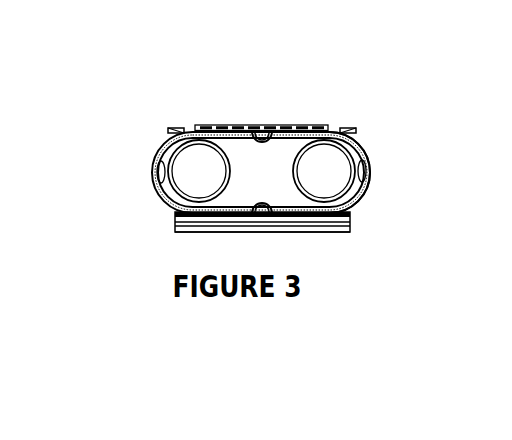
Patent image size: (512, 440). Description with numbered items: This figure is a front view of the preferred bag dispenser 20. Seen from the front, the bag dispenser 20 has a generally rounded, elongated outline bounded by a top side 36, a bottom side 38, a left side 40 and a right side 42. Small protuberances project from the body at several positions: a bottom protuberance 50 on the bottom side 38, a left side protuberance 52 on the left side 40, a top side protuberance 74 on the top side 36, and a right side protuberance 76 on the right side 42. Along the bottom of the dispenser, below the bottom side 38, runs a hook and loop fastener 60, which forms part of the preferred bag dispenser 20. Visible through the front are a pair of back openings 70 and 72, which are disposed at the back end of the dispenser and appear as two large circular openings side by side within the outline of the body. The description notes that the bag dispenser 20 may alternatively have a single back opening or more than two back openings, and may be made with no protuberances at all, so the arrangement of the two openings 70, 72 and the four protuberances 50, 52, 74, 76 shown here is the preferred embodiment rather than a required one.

The bag dispenser 20 is at (214, 111).
The top side 36 is at (297, 125).
The bottom side 38 is at (330, 223).
The left side 40 is at (157, 154).
The right side 42 is at (363, 152).
The bottom protuberance 50 is at (259, 209).
The left side protuberance 52 is at (157, 180).
The hook and loop fastener 60 is at (180, 232).
The back opening 70 is at (183, 130).
The back opening 72 is at (330, 155).
The top side protuberance 74 is at (257, 134).
The right side protuberance 76 is at (368, 172).